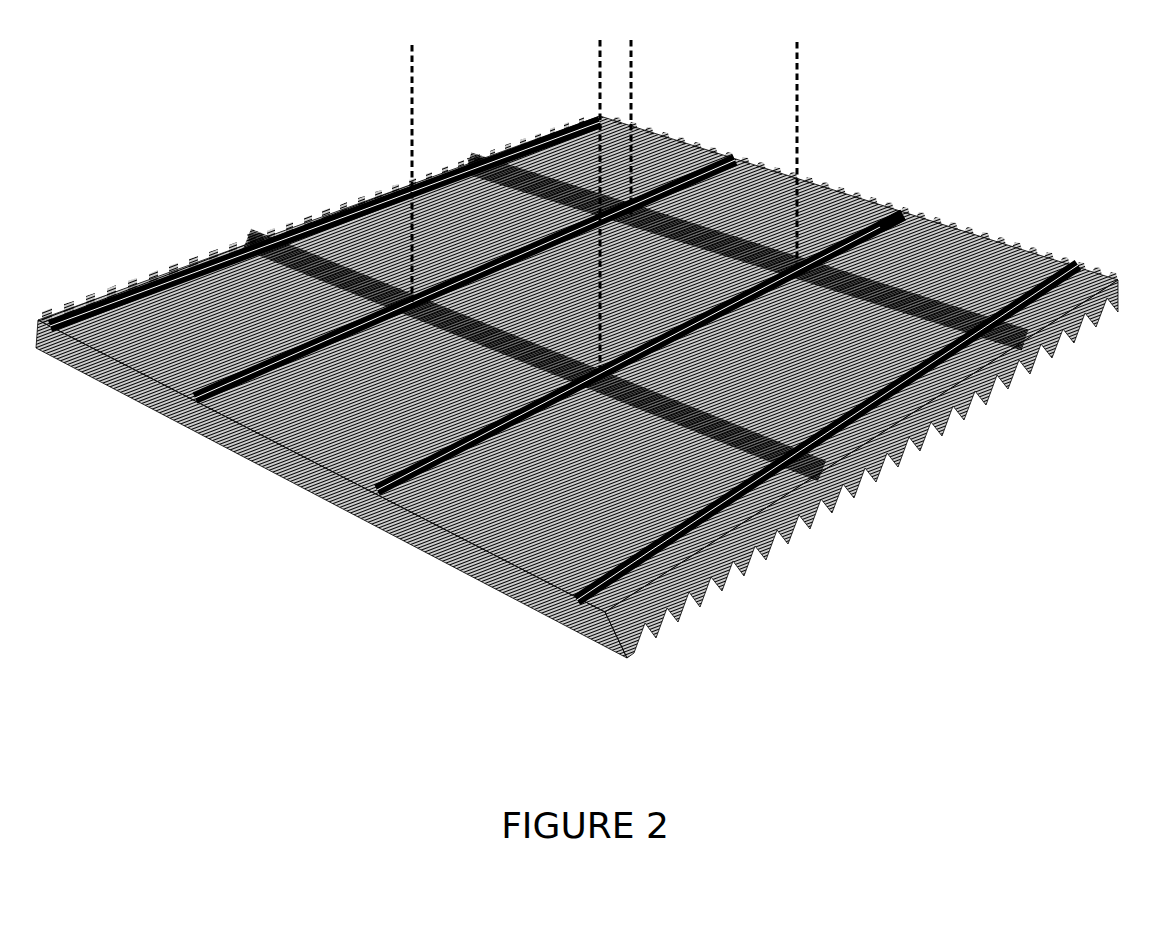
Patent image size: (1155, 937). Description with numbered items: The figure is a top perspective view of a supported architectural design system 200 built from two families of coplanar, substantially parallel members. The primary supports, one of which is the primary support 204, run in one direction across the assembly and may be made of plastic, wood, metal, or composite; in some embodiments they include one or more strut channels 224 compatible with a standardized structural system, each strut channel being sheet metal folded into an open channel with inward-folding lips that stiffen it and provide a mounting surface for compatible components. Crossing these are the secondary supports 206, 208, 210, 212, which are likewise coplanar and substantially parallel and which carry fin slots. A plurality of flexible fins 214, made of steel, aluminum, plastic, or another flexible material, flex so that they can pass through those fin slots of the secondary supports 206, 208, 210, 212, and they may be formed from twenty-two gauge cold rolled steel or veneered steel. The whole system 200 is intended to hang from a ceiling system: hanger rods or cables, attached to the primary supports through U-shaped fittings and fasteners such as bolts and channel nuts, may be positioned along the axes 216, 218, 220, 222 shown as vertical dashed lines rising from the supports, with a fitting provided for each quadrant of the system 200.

The supported architectural design system 200 is at (1012, 93).
The primary support 204 is at (248, 236).
The secondary support 206 is at (115, 378).
The secondary support 208 is at (248, 434).
The secondary support 210 is at (412, 530).
The secondary support 212 is at (613, 596).
The flexible fins 214 is at (182, 262).
The axis 216 is at (410, 148).
The axis 218 is at (598, 108).
The axis 220 is at (634, 124).
The axis 222 is at (800, 136).
The strut channel 224 is at (908, 198).